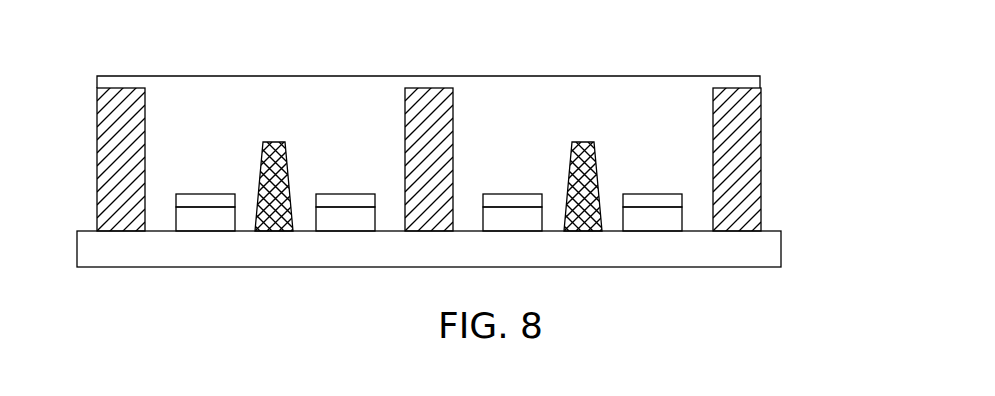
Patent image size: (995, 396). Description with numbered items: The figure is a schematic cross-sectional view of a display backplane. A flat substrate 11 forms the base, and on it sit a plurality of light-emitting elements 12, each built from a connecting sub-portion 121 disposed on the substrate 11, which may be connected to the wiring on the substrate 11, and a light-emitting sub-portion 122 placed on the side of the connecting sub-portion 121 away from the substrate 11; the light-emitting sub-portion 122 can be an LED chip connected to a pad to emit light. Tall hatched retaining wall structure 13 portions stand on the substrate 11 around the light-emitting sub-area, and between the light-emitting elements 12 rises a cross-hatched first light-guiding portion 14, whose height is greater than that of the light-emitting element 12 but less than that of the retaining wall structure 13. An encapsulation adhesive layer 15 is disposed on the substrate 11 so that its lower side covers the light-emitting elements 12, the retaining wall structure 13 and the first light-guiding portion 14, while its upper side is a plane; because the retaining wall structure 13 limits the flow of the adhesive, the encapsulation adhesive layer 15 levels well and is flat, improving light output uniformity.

The substrate 11 is at (781, 249).
The light-emitting element 12 is at (553, 200).
The connecting sub-portion 121 is at (653, 223).
The light-emitting sub-portion 122 is at (663, 200).
The retaining wall structure 13 is at (718, 152).
The first light-guiding portion 14 is at (595, 172).
The encapsulation adhesive layer 15 is at (685, 92).